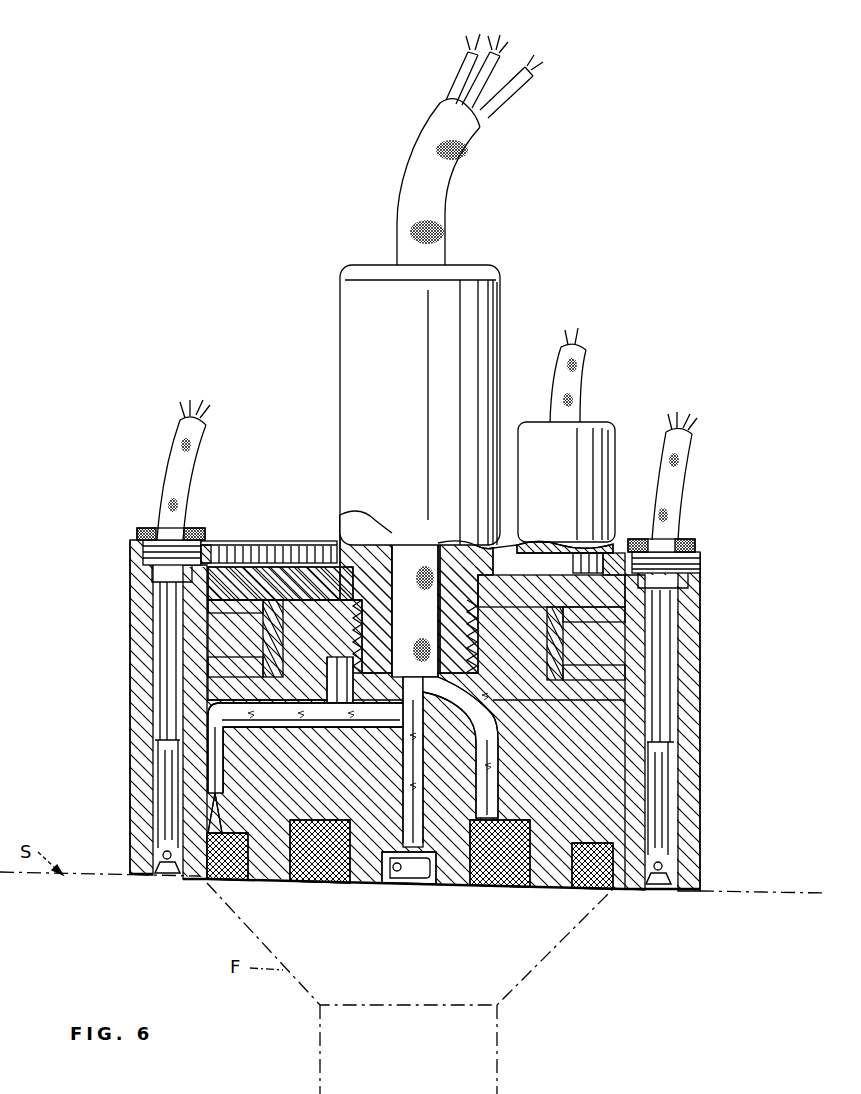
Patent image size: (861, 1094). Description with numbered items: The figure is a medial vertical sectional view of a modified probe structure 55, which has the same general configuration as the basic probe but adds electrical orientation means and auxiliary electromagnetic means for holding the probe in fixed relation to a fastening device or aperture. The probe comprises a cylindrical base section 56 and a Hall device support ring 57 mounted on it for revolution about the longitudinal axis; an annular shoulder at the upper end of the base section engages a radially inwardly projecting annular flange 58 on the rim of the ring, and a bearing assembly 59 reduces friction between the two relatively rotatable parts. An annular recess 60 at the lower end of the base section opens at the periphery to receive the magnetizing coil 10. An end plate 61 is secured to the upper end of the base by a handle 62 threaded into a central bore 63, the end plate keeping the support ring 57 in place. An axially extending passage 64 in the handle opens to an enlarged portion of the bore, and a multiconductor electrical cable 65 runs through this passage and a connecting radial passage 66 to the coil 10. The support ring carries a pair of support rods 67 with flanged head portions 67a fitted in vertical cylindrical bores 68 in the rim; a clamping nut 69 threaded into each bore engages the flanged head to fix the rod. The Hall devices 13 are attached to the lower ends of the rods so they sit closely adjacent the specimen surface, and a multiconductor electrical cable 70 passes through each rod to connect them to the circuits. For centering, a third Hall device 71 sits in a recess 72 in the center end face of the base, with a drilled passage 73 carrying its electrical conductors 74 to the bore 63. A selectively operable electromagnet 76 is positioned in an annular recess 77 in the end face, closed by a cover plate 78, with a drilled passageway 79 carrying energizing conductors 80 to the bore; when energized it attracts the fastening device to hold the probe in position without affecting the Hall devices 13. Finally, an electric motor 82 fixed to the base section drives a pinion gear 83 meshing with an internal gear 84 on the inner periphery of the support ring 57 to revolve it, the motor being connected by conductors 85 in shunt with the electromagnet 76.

The magnetizing coil 10 is at (605, 890).
The Hall devices 13 is at (165, 874).
The modified probe structure 55 is at (264, 400).
The base section 56 is at (545, 887).
The Hall device support ring 57 is at (692, 682).
The radially inwardly projecting annular flange 58 is at (618, 651).
The bearing assembly 59 is at (200, 652).
The annular recess 60 is at (222, 868).
The end plate 61 is at (293, 570).
The handle 62 is at (340, 334).
The central bore 63 is at (455, 673).
The axially extending passage 64 is at (398, 532).
The multiconductor electrical cable 65 is at (460, 81).
The radial passage 66 is at (207, 711).
The support rods 67 is at (160, 691).
The flanged head portions 67a is at (143, 569).
The cylindrical bores 68 is at (160, 806).
The clamping nut 69 is at (700, 542).
The multiconductor electrical cable 70 is at (166, 484).
The centering Hall device 71 is at (403, 886).
The recess 72 is at (425, 886).
The drilled passage 73 is at (412, 745).
The electrical conductors 74 is at (487, 62).
The electromagnet 76 is at (492, 886).
The annular recess 77 is at (355, 883).
The cover plate 78 is at (305, 882).
The drilled passageway 79 is at (480, 742).
The energizing conductors 80 is at (516, 85).
The electric motor 82 is at (598, 424).
The pinion gear 83 is at (552, 542).
The internal gear 84 is at (233, 545).
The conductors 85 is at (580, 389).